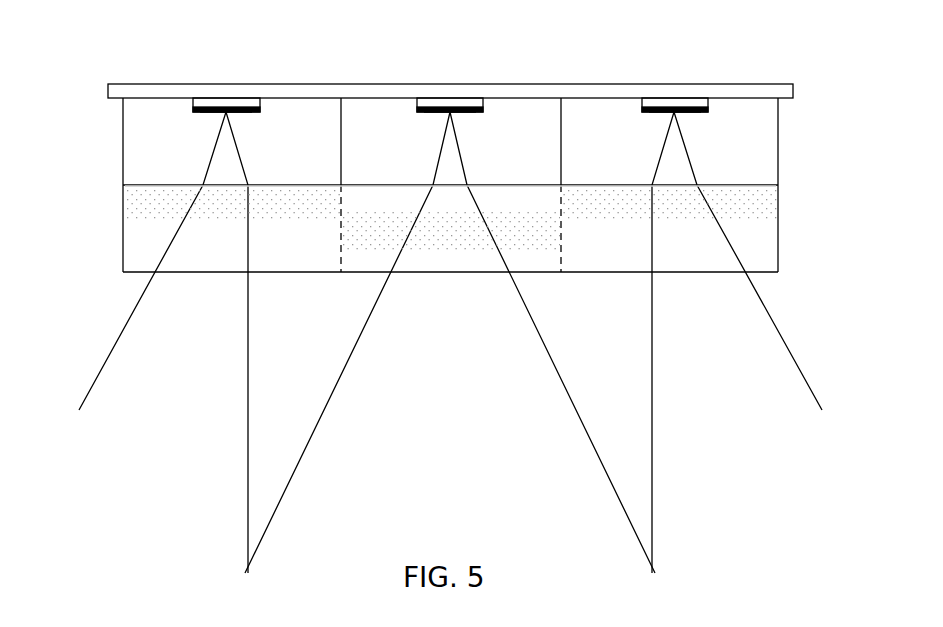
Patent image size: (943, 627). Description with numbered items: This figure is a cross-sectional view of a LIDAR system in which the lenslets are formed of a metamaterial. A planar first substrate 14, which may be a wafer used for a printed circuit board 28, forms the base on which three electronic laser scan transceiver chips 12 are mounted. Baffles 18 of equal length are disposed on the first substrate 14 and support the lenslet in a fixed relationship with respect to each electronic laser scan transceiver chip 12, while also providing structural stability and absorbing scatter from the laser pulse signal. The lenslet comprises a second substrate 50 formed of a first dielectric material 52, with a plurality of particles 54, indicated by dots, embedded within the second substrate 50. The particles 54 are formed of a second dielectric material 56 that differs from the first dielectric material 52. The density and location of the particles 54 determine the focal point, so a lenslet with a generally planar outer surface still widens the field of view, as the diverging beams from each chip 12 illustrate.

The first substrate 14 is at (355, 84).
The baffle 18 is at (123, 138).
The printed circuit board 28 is at (240, 98).
The electronic laser scan transceiver chip 12 is at (198, 113).
The first dielectric material 52 is at (152, 251).
The particles 54 is at (166, 199).
The second dielectric material 56 is at (456, 245).
The second substrate 50 is at (781, 261).